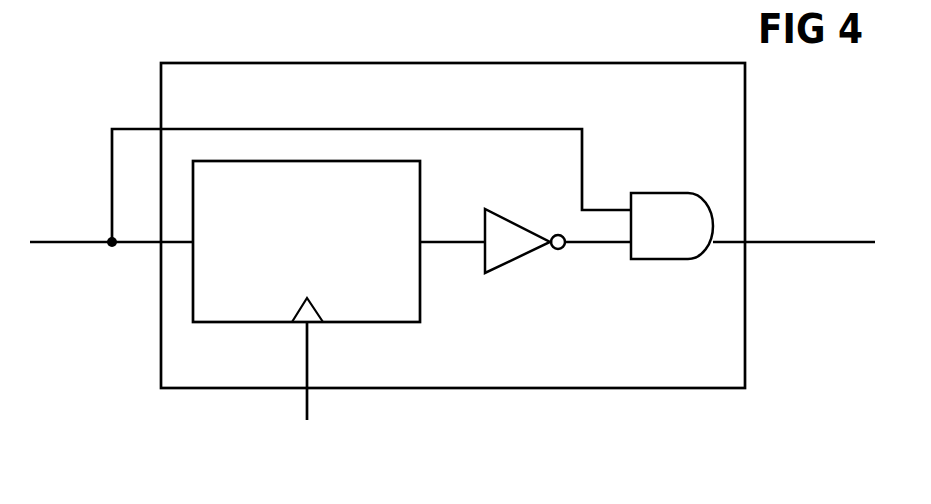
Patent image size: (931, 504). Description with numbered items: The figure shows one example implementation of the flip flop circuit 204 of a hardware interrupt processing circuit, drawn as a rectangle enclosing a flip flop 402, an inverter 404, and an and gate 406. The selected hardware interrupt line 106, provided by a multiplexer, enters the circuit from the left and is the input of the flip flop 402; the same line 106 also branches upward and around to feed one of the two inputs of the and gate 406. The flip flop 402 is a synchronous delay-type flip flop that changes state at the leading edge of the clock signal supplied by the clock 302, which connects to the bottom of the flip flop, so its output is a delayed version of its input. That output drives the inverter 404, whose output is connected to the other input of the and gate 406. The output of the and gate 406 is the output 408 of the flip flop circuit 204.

The flip flop circuit 204 is at (734, 96).
The selected hardware interrupt line 106 is at (122, 324).
The flip flop 402 is at (324, 216).
The clock 302 is at (323, 476).
The inverter 404 is at (507, 266).
The and gate 406 is at (678, 259).
The output 408 is at (828, 298).